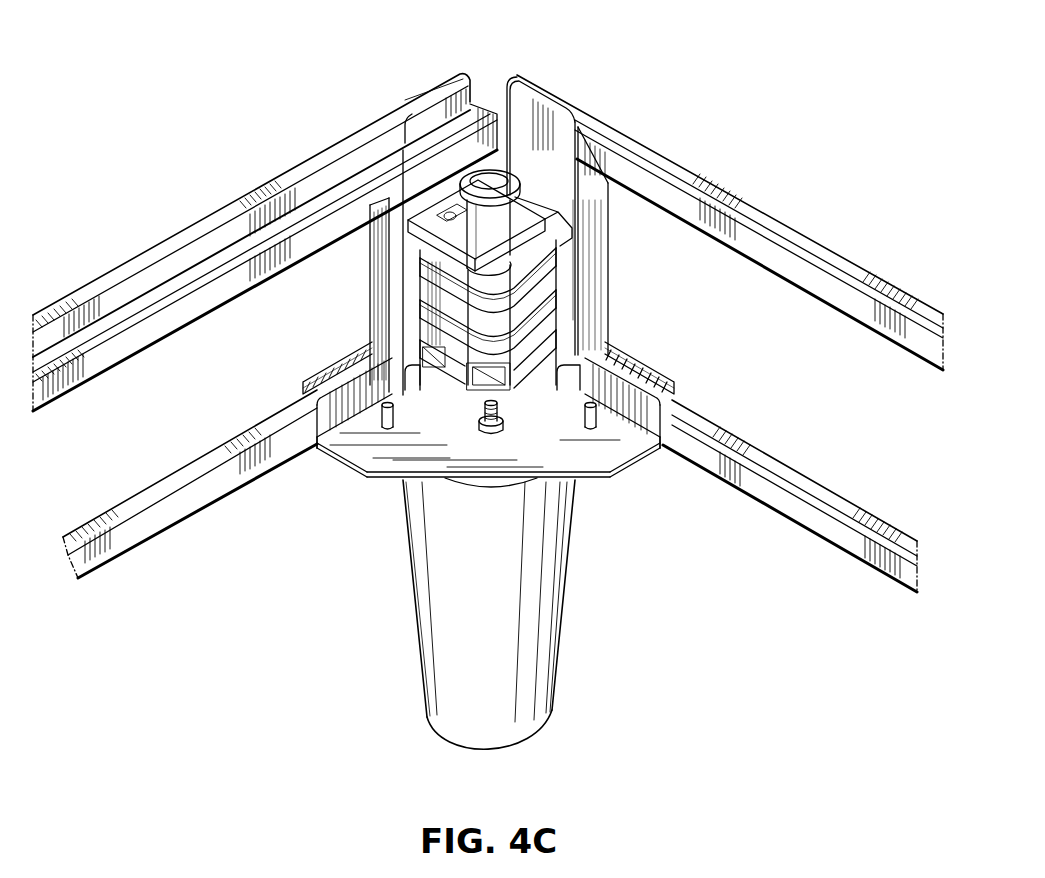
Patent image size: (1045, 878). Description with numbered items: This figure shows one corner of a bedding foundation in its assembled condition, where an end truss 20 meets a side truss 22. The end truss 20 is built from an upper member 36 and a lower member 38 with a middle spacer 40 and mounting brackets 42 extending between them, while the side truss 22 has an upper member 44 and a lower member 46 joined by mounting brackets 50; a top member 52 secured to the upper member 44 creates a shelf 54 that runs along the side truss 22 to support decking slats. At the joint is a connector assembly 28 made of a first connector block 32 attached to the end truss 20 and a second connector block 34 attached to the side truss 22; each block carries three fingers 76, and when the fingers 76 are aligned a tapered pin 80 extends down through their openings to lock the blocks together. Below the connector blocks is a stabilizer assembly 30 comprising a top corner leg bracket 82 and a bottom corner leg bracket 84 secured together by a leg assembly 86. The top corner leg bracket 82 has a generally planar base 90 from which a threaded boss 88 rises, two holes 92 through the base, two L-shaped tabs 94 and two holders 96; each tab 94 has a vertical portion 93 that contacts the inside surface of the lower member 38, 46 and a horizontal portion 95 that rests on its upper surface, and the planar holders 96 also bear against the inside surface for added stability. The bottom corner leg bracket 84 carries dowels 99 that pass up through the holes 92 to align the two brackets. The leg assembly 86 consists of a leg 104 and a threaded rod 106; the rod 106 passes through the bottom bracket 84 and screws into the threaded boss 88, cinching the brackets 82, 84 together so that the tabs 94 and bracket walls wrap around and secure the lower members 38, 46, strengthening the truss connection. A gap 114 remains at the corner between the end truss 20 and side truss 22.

The end truss 20 is at (725, 217).
The side truss 22 is at (265, 242).
The connector assembly 28 is at (586, 282).
The stabilizer assembly 30 is at (489, 540).
The first connector block 32 is at (580, 255).
The second connector block 34 is at (398, 270).
The upper member 36 is at (860, 276).
The lower member 38 is at (834, 528).
The middle spacer 40 is at (603, 190).
The mounting bracket 42 is at (560, 120).
The upper member 44 is at (106, 357).
The lower member 46 is at (118, 548).
The mounting bracket 50 is at (410, 122).
The top member 52 is at (193, 226).
The shelf 54 is at (306, 190).
The finger 76 is at (563, 352).
The tapered pin 80 is at (482, 176).
The top corner leg bracket 82 is at (313, 424).
The bottom corner leg bracket 84 is at (489, 465).
The leg assembly 86 is at (513, 614).
The threaded boss 88 is at (488, 458).
The generally planar base 90 is at (623, 456).
The hole 92 is at (589, 427).
The vertical portion 93 is at (655, 424).
The tab 94 is at (312, 392).
The horizontal portion 95 is at (348, 380).
The holder 96 is at (405, 368).
The dowel 99 is at (396, 416).
The leg 104 is at (554, 588).
The threaded rod 106 is at (499, 414).
The gap 114 is at (495, 209).